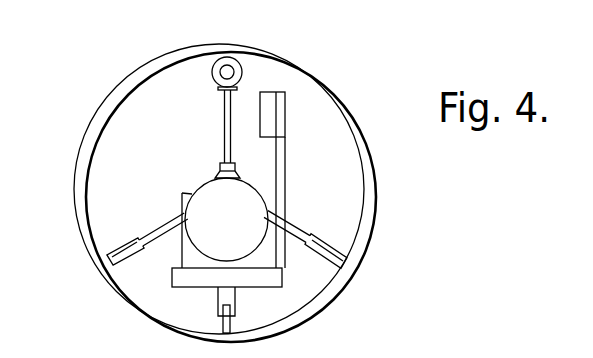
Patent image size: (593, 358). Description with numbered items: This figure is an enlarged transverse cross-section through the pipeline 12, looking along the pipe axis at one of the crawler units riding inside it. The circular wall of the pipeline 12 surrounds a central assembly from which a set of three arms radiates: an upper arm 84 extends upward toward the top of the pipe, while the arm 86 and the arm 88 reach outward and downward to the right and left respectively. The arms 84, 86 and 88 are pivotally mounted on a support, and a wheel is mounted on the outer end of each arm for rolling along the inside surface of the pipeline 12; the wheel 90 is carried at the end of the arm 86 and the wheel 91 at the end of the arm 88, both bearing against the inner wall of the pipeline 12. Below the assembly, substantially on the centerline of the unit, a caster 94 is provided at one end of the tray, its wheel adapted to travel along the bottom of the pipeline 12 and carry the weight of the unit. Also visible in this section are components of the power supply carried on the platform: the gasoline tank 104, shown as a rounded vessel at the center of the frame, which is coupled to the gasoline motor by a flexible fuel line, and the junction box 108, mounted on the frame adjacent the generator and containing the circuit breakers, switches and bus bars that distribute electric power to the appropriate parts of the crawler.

The pipeline 12 is at (339, 95).
The arm 84 is at (232, 105).
The junction box 108 is at (260, 128).
The gasoline tank 104 is at (182, 193).
The arm 88 is at (145, 233).
The wheel 91 is at (112, 258).
The arm 86 is at (305, 237).
The wheel 90 is at (338, 252).
The caster 94 is at (218, 318).